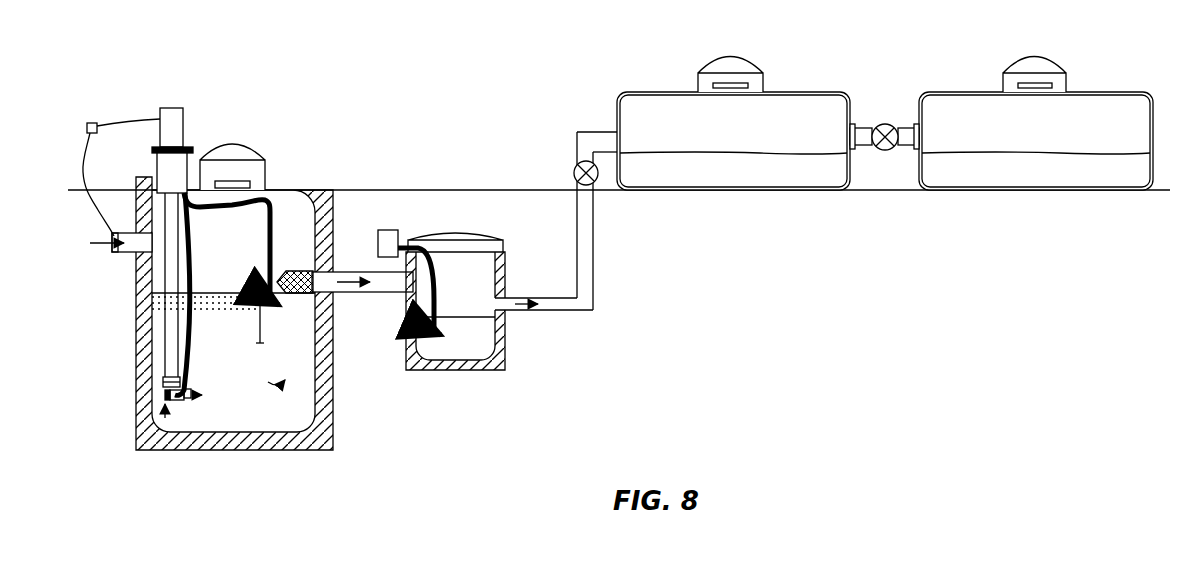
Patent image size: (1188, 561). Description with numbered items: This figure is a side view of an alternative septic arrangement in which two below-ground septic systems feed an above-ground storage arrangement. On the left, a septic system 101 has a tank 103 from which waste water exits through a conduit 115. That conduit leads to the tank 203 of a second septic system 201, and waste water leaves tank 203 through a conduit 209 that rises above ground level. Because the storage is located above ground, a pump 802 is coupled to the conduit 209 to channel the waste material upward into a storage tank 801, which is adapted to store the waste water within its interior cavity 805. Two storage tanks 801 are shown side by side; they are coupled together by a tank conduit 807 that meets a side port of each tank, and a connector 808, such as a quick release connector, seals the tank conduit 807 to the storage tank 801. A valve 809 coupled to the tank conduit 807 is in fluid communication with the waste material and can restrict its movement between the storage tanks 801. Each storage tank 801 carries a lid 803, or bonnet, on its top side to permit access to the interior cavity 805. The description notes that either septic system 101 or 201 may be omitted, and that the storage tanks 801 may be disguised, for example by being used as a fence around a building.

The septic system 101 is at (210, 319).
The tank 103 is at (145, 462).
The conduit 115 is at (348, 294).
The septic system 201 is at (495, 340).
The tank 203 is at (505, 340).
The conduit 209 is at (590, 130).
The storage tank 801 is at (802, 90).
The pump 802 is at (574, 167).
The lid 803 is at (717, 57).
The interior cavity 805 is at (727, 140).
The tank conduit 807 is at (870, 148).
The connector 808 is at (914, 148).
The valve 809 is at (886, 122).